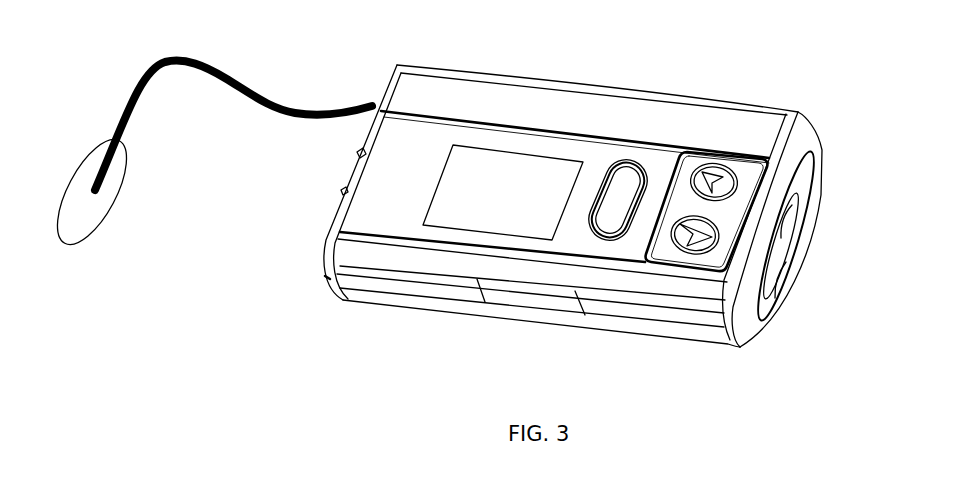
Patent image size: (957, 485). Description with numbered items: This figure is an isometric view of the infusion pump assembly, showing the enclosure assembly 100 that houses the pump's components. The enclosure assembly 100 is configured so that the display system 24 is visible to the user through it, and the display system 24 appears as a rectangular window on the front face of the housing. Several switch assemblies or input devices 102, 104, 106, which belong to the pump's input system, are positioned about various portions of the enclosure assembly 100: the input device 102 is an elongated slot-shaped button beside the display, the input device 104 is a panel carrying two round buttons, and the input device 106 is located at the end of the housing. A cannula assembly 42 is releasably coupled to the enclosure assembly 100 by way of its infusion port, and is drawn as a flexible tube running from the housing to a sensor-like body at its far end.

The enclosure assembly 100 is at (612, 218).
The display system 24 is at (530, 158).
The switch assembly/input device 102 is at (592, 226).
The switch assembly/input device 104 is at (656, 268).
The switch assembly/input device 106 is at (781, 250).
The cannula assembly 42 is at (133, 108).